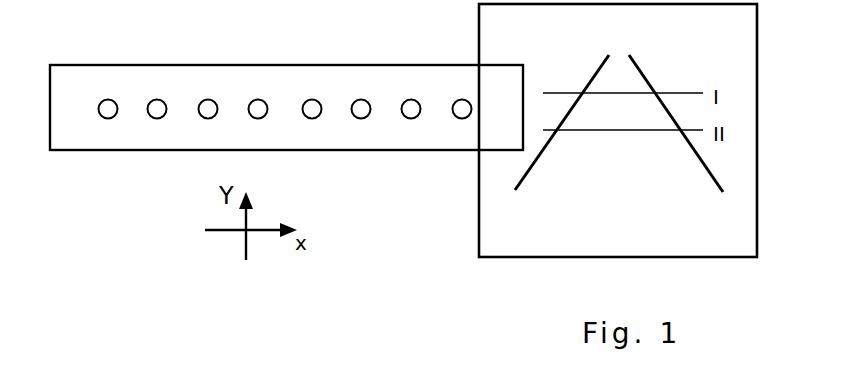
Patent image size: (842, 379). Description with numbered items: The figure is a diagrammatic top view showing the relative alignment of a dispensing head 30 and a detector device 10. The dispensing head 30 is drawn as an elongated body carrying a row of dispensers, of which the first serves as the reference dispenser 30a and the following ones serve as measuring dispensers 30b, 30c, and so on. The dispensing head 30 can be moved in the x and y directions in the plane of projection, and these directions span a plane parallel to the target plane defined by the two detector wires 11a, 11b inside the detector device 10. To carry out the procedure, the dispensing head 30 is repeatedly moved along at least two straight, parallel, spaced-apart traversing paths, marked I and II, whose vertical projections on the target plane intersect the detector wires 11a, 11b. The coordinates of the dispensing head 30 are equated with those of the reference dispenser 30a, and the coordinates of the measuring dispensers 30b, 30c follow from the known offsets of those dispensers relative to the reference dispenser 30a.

The detector device 10 is at (739, 246).
The detector wire 11a is at (562, 126).
The detector wire 11b is at (676, 126).
The dispensing head 30 is at (519, 99).
The reference dispenser 30a is at (98, 97).
The measuring dispenser 30b is at (163, 97).
The measuring dispenser 30c is at (209, 97).